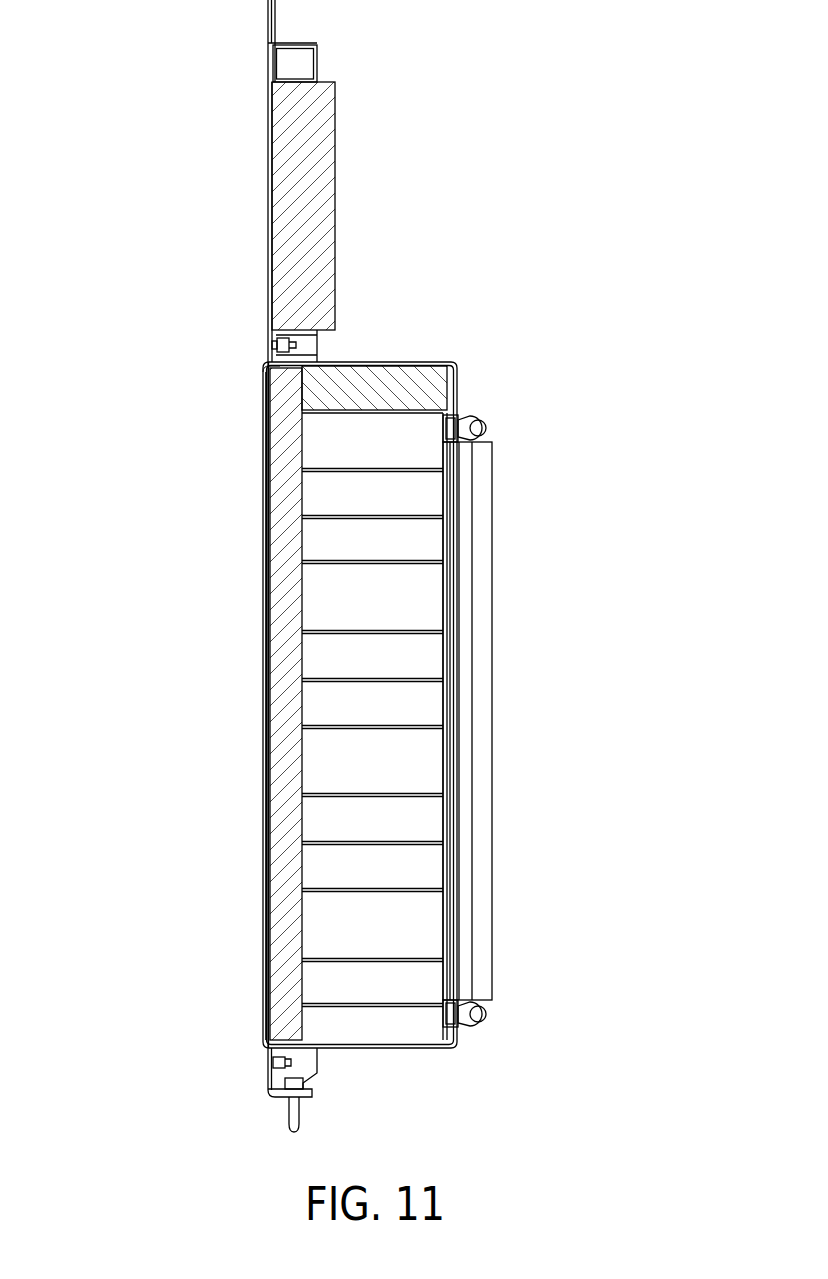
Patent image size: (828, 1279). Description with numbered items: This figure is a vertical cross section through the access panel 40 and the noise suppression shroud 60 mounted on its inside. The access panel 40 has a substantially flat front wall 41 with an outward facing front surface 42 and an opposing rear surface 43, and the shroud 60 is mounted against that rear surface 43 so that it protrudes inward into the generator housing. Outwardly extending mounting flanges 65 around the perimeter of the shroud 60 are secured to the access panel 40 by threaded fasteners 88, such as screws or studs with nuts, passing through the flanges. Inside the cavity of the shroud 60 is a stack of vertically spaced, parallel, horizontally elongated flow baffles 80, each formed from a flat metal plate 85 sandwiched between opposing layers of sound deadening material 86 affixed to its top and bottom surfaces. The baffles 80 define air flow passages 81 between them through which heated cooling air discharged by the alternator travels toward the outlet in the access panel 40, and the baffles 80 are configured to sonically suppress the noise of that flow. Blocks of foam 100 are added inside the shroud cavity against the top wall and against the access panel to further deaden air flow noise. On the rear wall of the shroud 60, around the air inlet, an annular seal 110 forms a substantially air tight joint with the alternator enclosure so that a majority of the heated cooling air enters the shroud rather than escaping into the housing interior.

The access panel 40 is at (190, 110).
The front wall 41 is at (267, 167).
The front surface 42 is at (258, 200).
The rear surface 43 is at (274, 138).
The foam block 100 is at (315, 232).
The threaded fasteners 88 is at (292, 344).
The noise suppression shroud 60 is at (478, 385).
The mounting flanges 65 is at (270, 362).
The annular seal 110 is at (492, 460).
The flow baffles 80 is at (432, 506).
The flat metal plate 85 is at (312, 518).
The sound deadening material 86 is at (313, 487).
The air flow passages 81 is at (381, 613).